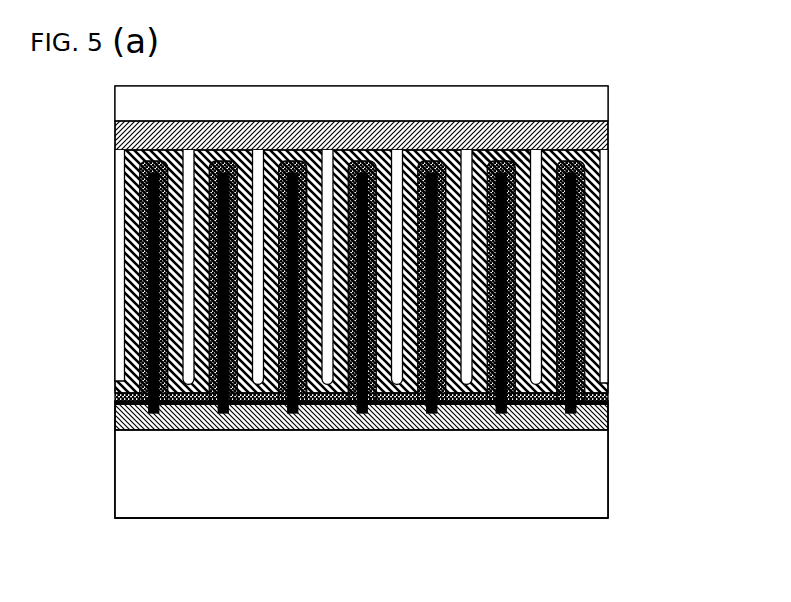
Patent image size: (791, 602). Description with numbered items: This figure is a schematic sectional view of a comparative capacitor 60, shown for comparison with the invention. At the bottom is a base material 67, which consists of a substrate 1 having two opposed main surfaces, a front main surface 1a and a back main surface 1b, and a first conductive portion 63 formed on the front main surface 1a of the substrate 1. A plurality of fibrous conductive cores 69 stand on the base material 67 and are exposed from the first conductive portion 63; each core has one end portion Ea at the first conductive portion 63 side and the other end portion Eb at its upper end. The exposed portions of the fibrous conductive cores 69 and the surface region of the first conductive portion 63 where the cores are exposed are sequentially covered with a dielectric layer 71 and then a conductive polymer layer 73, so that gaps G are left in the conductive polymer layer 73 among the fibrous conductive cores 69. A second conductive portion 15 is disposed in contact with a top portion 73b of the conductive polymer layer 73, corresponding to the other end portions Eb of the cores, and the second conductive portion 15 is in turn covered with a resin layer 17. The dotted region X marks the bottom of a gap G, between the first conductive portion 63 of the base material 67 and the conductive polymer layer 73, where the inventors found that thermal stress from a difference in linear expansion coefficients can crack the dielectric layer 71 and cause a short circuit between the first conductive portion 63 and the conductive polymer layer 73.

The capacitor 60 is at (615, 540).
The resin layer 17 is at (583, 95).
The second conductive portion 15 is at (603, 117).
The conductive polymer layer 73 is at (590, 217).
The top portion of the conductive polymer layer 73b is at (487, 155).
The gaps G is at (460, 167).
The dielectric layer 71 is at (575, 267).
The fibrous conductive cores 69 is at (573, 322).
The other end portion of the fibrous conductive core Eb is at (593, 160).
The one end portion of the fibrous conductive core Ea is at (575, 420).
The region X is at (393, 400).
The first conductive portion 63 is at (602, 405).
The substrate 1 is at (583, 457).
The main surface 1a is at (328, 422).
The main surface 1b is at (330, 510).
The base material 67 is at (713, 405).